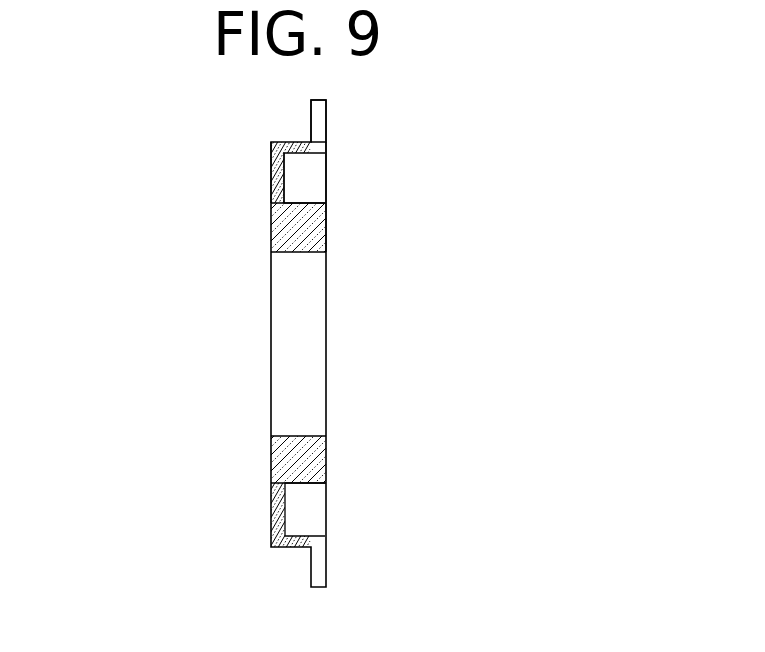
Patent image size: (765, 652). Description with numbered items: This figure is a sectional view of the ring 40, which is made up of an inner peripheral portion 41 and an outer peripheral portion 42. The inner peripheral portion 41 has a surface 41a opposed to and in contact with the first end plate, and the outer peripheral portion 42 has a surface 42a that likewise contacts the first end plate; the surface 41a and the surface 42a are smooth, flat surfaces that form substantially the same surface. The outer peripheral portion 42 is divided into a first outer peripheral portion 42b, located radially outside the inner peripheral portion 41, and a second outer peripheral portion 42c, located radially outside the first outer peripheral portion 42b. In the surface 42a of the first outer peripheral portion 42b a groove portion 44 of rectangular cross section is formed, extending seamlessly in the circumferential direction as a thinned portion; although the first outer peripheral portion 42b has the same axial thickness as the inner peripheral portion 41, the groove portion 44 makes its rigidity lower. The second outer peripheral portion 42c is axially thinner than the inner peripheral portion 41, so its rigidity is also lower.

The ring 40 is at (71, 130).
The inner peripheral portion 41 is at (289, 224).
The surface 41a is at (326, 230).
The outer peripheral portion 42 is at (163, 112).
The surface 42a is at (326, 141).
The first outer peripheral portion 42b is at (275, 178).
The second outer peripheral portion 42c is at (311, 121).
The groove portion 44 is at (313, 184).